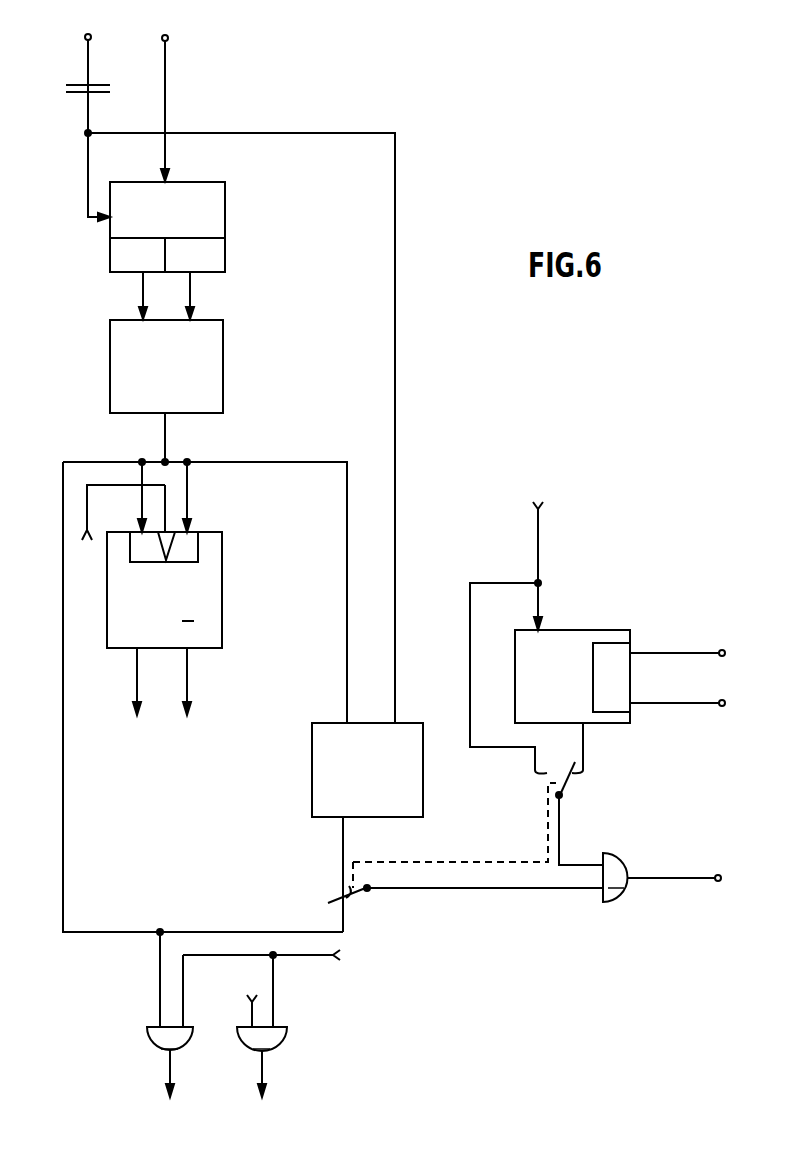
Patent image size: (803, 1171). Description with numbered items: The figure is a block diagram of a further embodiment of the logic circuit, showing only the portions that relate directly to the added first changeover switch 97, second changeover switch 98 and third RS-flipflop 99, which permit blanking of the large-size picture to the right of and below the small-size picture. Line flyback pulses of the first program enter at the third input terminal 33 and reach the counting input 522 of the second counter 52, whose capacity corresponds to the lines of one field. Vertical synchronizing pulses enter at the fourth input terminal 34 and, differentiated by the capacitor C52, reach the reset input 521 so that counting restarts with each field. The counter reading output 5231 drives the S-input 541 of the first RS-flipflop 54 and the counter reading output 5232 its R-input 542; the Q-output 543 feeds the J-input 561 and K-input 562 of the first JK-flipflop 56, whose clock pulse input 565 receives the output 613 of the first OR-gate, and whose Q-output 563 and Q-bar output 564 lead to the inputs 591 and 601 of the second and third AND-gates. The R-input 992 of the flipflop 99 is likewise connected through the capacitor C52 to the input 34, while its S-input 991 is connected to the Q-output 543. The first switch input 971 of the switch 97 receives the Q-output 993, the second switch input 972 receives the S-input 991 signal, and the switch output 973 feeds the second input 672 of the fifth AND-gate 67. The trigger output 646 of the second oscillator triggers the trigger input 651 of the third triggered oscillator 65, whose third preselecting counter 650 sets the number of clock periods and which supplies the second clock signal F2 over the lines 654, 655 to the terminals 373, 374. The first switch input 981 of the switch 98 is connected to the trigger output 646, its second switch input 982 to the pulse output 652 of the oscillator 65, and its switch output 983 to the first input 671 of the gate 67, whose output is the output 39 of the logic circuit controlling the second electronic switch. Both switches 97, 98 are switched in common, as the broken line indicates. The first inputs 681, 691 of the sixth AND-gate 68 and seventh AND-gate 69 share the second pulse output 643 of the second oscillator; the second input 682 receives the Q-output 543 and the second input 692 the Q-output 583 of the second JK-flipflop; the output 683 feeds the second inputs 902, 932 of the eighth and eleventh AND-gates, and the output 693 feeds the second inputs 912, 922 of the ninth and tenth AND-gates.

The fourth input terminal 34 is at (94, 115).
The third input terminal 33 is at (165, 95).
The capacitor C52 is at (70, 89).
The second counter 52 is at (203, 215).
The counting input 522 is at (166, 197).
The reset input 521 is at (127, 215).
The counter reading output 5231 is at (137, 255).
The output stage of circuit 52 5232 is at (195, 255).
The S-input 541 is at (138, 315).
The R-input 542 is at (200, 310).
The first RS-flipflop 54 is at (203, 370).
The Q-output 543 is at (168, 420).
The J-input 561 is at (138, 528).
The K-input 562 is at (198, 524).
The output of first OR-gate 613 is at (118, 528).
The clock pulse input 565 is at (164, 538).
The first JK-flipflop 56 is at (203, 592).
The Q-output 563 is at (137, 655).
The Q-bar output 564 is at (187, 655).
The first input of second AND-gate 591 is at (140, 718).
The first input of third AND-gate 601 is at (190, 718).
The S-input 991 is at (343, 722).
The R-input 992 is at (409, 707).
The third RS-flipflop 99 is at (403, 793).
The Q-output 993 is at (350, 822).
The first switch input 971 is at (341, 882).
The second switch input 972 is at (332, 900).
The switch output 973 is at (368, 888).
The first changeover switch 97 is at (350, 907).
The trigger output 646 is at (539, 554).
The third triggered oscillator 65 is at (595, 637).
The trigger input 651 is at (536, 644).
The third preselecting counter 650 is at (603, 693).
The output line 654 is at (632, 656).
The output line 655 is at (632, 703).
The output terminal 373 is at (728, 645).
The output terminal 374 is at (724, 706).
The second clock signal F2 is at (722, 682).
The pulse output 652 is at (595, 748).
The second changeover switch 98 is at (558, 770).
The first switch input 981 is at (535, 773).
The second switch input 982 is at (582, 773).
The switch output 983 is at (561, 796).
The first input of fifth AND-gate 671 is at (602, 868).
The second input of fifth AND-gate 672 is at (602, 895).
The fifth AND-gate 67 is at (615, 877).
The output of logic circuit 39 is at (686, 884).
The second pulse output 643 is at (281, 960).
The Q-output of second JK-flipflop 583 is at (251, 999).
The second input of sixth AND-gate 682 is at (158, 1022).
The first input of sixth AND-gate 681 is at (190, 1015).
The second input of seventh AND-gate 692 is at (251, 1022).
The first input of seventh AND-gate 691 is at (280, 1015).
The sixth AND-gate 68 is at (170, 1038).
The seventh AND-gate 69 is at (262, 1039).
The output of sixth AND-gate 683 is at (168, 1053).
The output of seventh AND-gate 693 is at (263, 1055).
The second input of eighth AND-gate 902 is at (142, 1117).
The second input of eleventh AND-gate 932 is at (179, 1117).
The second input of ninth AND-gate 912 is at (258, 1117).
The second input of tenth AND-gate 922 is at (296, 1117).